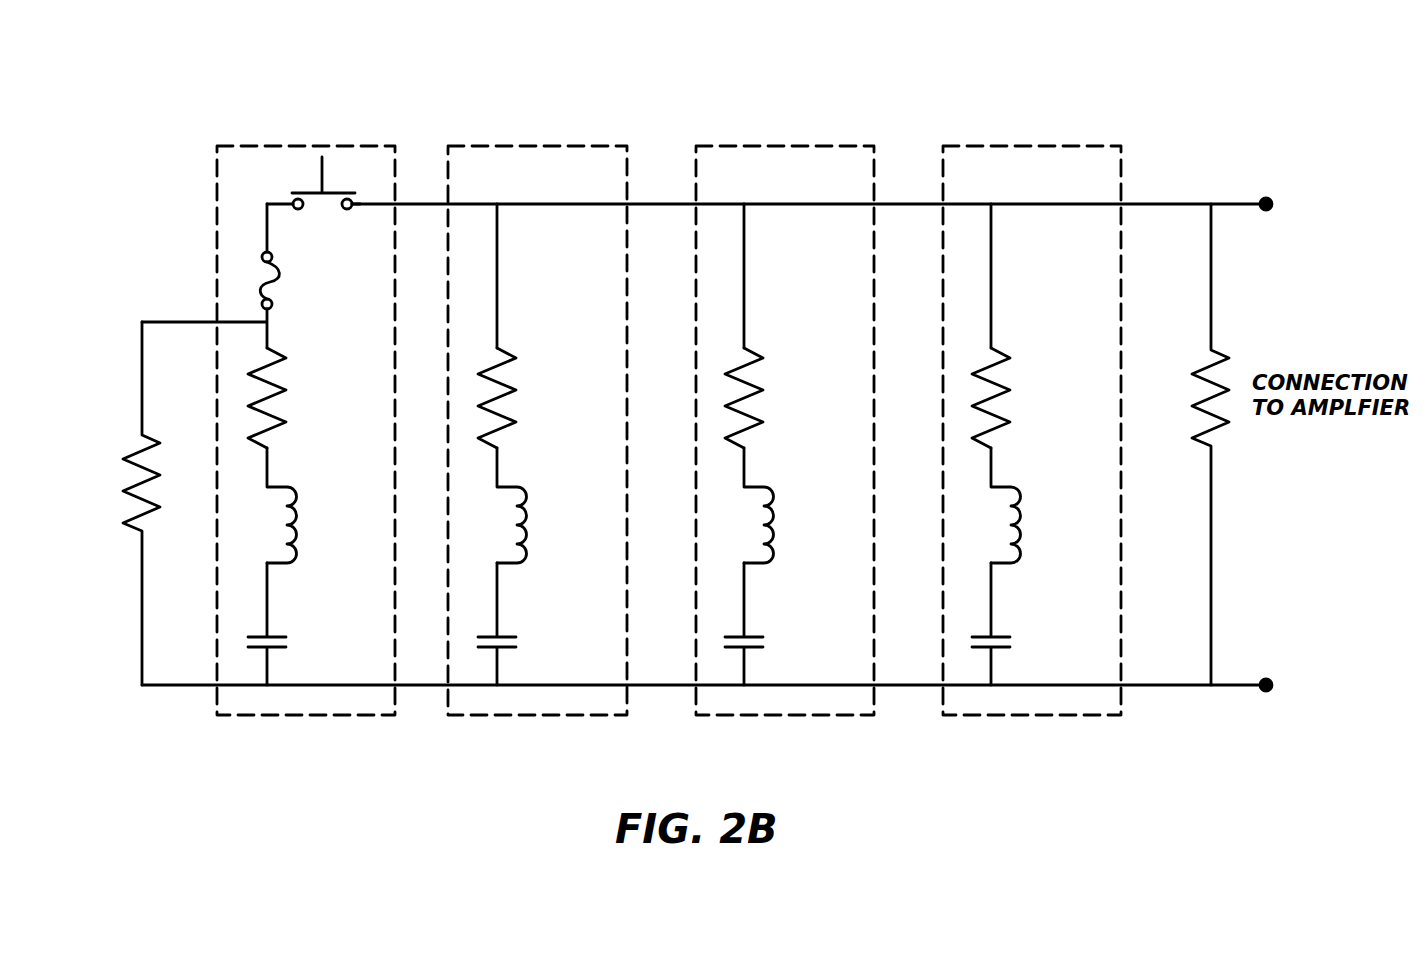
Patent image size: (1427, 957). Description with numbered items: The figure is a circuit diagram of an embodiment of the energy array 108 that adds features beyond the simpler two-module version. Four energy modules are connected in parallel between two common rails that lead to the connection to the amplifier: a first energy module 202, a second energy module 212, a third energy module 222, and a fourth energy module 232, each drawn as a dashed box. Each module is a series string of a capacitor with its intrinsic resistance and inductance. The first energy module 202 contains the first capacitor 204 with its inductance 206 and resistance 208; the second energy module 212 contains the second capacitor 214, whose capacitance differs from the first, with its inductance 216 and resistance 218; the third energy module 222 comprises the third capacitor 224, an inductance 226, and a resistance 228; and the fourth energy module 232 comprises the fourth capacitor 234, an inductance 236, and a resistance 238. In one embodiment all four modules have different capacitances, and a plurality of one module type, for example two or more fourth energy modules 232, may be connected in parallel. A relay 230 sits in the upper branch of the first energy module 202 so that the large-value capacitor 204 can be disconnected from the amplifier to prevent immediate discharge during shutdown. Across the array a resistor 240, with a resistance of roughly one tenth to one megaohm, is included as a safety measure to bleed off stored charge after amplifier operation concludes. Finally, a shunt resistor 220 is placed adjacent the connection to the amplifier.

The energy array 108 is at (1282, 113).
The first energy module 202 is at (430, 120).
The first capacitor 204 is at (277, 635).
The inductance 206 is at (298, 520).
The resistance 208 is at (288, 383).
The second energy module 212 is at (670, 120).
The second capacitor 214 is at (507, 635).
The inductance 216 is at (528, 520).
The resistance 218 is at (518, 383).
The shunt resistor 220 is at (1220, 345).
The third energy module 222 is at (917, 120).
The third capacitor 224 is at (754, 635).
The inductance 226 is at (775, 520).
The resistance 228 is at (765, 383).
The relay 230 is at (312, 177).
The fourth energy module 232 is at (1163, 120).
The fourth capacitor 234 is at (1001, 635).
The inductance 236 is at (1022, 520).
The resistance 238 is at (1012, 383).
The resistor 240 is at (138, 444).